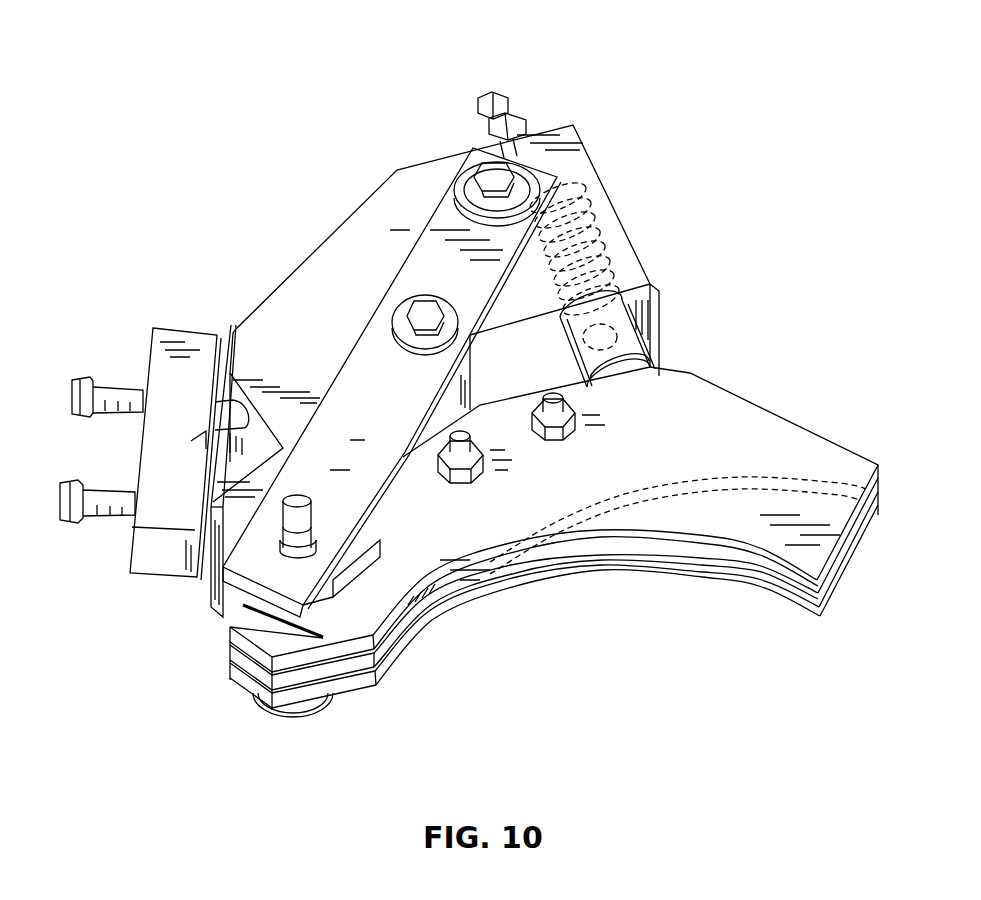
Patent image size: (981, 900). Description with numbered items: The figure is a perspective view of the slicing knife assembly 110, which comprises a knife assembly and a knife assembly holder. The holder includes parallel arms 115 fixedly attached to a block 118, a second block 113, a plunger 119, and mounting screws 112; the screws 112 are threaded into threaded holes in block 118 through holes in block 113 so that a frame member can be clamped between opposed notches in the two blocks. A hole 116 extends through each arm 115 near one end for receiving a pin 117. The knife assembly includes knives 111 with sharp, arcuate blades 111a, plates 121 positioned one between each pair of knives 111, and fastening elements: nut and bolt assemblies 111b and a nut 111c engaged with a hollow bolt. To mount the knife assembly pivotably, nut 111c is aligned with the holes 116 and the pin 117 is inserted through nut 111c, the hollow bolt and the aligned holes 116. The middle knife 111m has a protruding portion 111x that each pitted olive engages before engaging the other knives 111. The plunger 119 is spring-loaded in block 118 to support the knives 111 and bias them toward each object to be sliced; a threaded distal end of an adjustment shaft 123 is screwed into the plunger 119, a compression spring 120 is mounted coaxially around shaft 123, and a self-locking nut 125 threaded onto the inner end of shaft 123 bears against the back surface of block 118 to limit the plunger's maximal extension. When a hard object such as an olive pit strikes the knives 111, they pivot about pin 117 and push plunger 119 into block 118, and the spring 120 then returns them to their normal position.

The slicing knife assembly 110 is at (245, 115).
The knives 111 is at (554, 563).
The arcuate blades 111a is at (603, 570).
The nut and bolt assemblies 111b is at (553, 435).
The nut 111c is at (372, 545).
The middle knife 111m is at (677, 548).
The protruding portion 111x is at (420, 612).
The mounting screws 112 is at (62, 488).
The block 113 is at (162, 328).
The arms 115 is at (400, 271).
The hole 116 is at (222, 603).
The pin 117 is at (297, 496).
The block 118 is at (272, 292).
The plunger 119 is at (652, 340).
The compression spring 120 is at (590, 247).
The plates 121 is at (790, 478).
The adjustment shaft 123 is at (487, 93).
The self-locking nut 125 is at (525, 120).